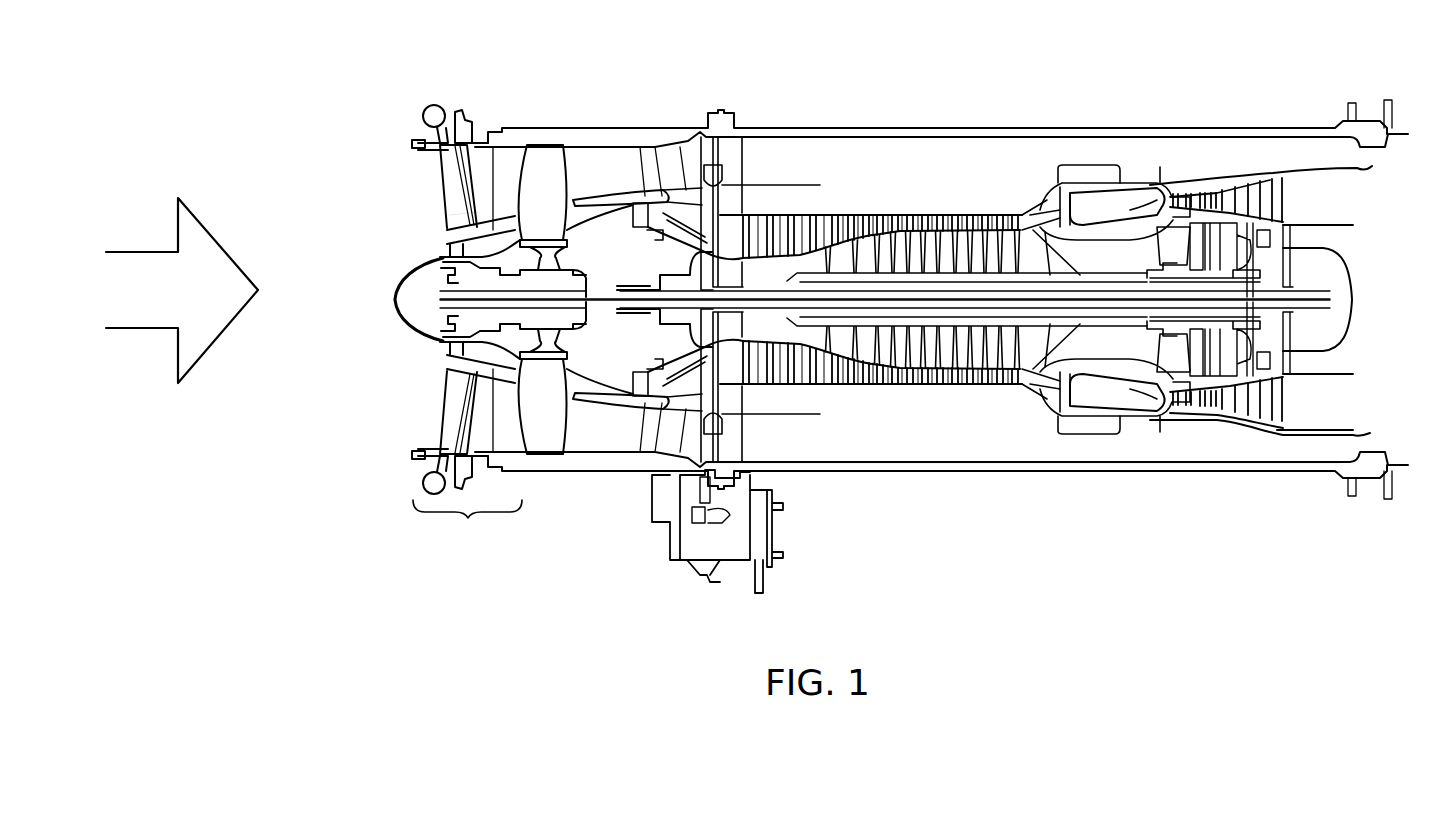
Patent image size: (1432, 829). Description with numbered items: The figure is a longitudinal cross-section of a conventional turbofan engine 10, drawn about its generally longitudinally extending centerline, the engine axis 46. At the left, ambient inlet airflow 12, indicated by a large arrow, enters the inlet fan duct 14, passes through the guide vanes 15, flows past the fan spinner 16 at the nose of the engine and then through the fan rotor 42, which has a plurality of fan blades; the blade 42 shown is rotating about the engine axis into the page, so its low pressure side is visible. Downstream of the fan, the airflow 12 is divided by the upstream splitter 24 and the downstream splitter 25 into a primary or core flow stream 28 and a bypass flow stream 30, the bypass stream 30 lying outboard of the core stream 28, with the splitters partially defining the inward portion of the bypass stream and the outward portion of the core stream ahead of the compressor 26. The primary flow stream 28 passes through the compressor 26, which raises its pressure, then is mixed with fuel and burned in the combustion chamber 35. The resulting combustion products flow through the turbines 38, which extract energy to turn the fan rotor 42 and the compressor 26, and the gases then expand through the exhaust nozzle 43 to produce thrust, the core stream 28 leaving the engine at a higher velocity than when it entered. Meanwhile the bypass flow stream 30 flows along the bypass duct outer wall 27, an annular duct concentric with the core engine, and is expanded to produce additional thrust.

The turbofan engine 10 is at (901, 83).
The ambient inlet airflow 12 is at (146, 301).
The inlet fan duct 14 is at (467, 522).
The guide vanes 15 is at (478, 175).
The fan spinner 16 is at (443, 340).
The upstream splitter 24 is at (448, 215).
The downstream splitter 25 is at (583, 203).
The compressor 26 is at (866, 380).
The bypass duct outer wall 27 is at (997, 482).
The primary flow stream 28 is at (610, 213).
The bypass flow stream 30 is at (622, 162).
The combustion chamber 35 is at (1160, 183).
The turbines 38 is at (1275, 170).
The fan rotor 42 is at (553, 199).
The exhaust nozzle 43 is at (1372, 168).
The engine axis 46 is at (1349, 299).